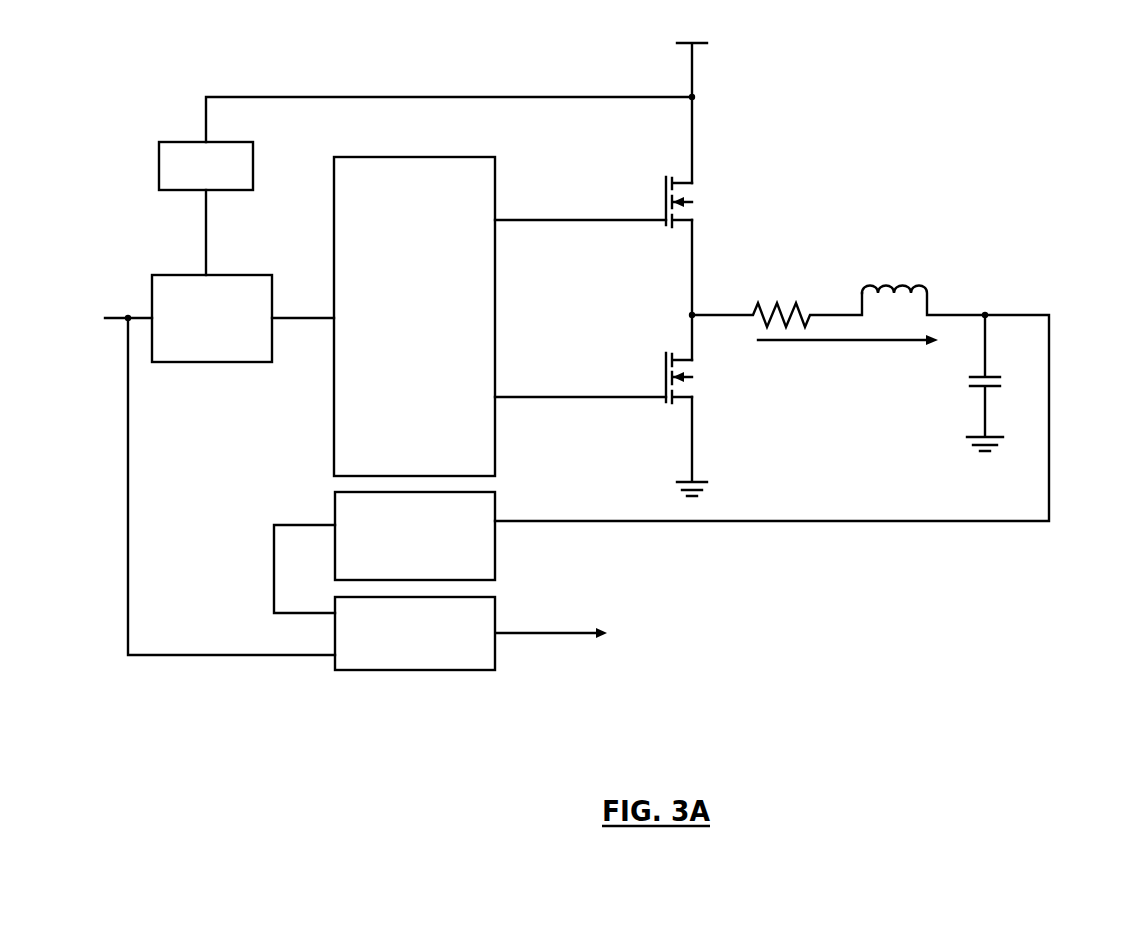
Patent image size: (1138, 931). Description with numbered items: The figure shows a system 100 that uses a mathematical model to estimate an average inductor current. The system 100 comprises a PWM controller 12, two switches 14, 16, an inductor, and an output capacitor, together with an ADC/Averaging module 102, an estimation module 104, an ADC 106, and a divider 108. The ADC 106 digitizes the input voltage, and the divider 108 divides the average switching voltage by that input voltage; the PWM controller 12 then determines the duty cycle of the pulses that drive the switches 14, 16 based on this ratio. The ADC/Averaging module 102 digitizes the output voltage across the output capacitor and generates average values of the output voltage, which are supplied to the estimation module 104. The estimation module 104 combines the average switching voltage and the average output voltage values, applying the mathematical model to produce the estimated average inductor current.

The system 100 is at (576, 369).
The PWM controller 12 is at (428, 157).
The switch 14 is at (667, 170).
The switch 16 is at (682, 347).
The ADC/Averaging module 102 is at (497, 557).
The estimation module 104 is at (418, 672).
The ADC 106 is at (237, 142).
The divider 108 is at (239, 275).